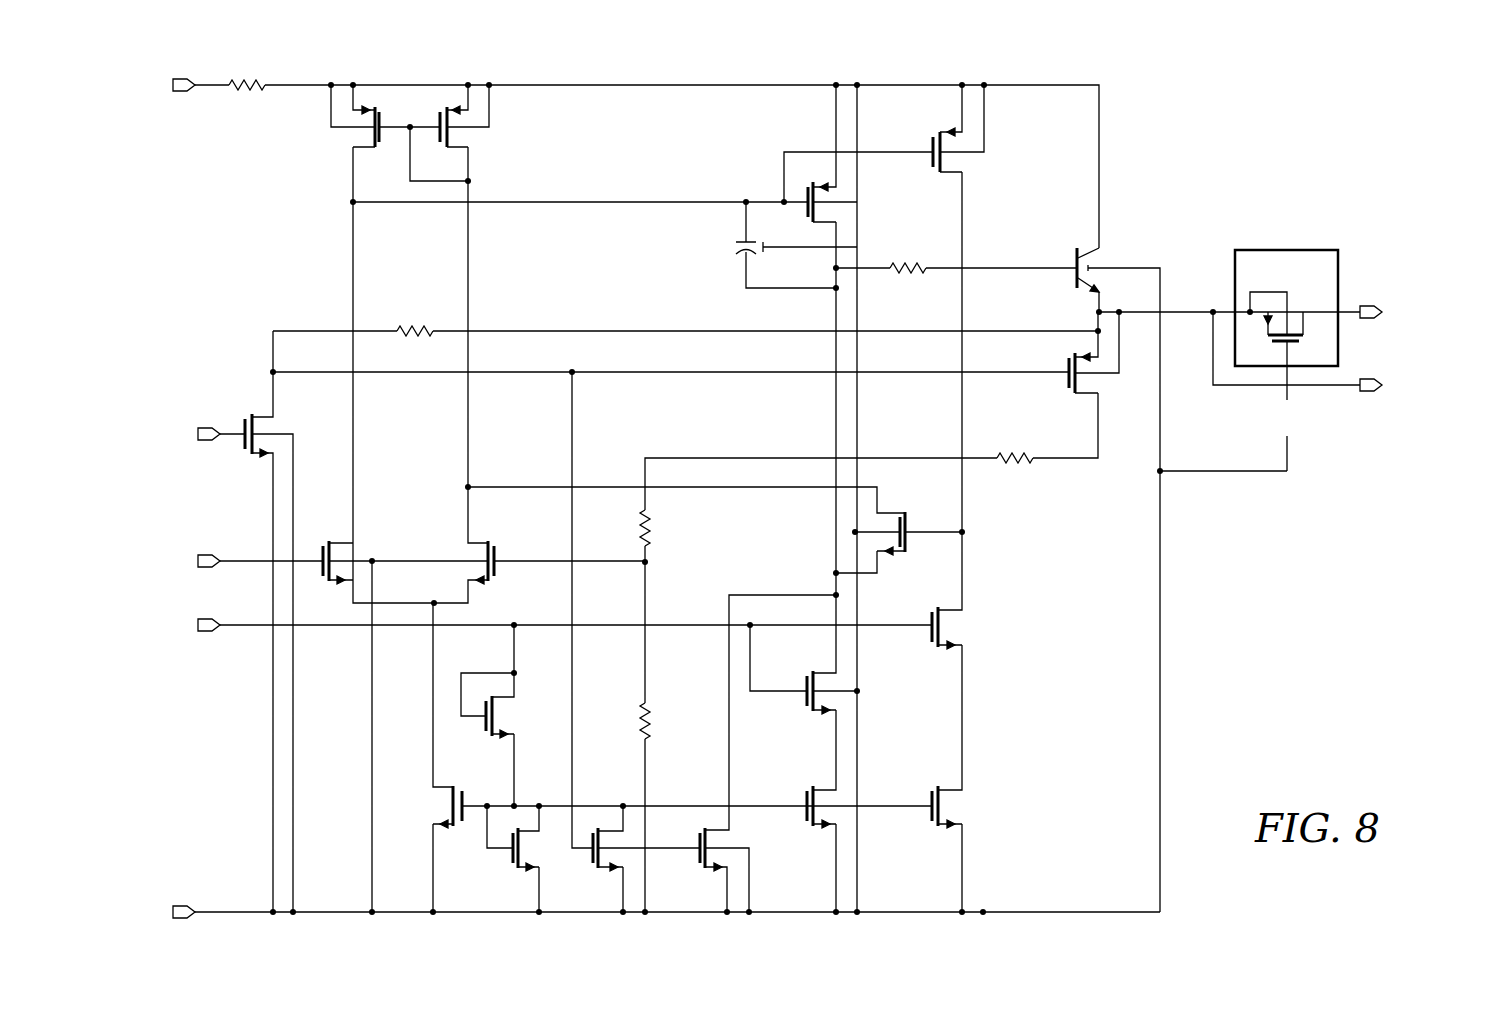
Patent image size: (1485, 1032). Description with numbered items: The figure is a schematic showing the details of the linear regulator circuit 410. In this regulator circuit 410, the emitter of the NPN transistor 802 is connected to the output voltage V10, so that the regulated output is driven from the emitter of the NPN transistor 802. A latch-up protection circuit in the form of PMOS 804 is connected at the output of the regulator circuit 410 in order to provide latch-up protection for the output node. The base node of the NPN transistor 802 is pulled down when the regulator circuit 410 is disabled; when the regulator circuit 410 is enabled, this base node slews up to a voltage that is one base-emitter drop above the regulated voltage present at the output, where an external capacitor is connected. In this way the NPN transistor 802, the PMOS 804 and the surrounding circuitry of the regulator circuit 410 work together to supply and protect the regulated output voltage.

The regulator circuit 410 is at (1298, 672).
The NPN transistor 802 is at (1066, 287).
The PMOS latch-up protection circuit 804 is at (1338, 272).